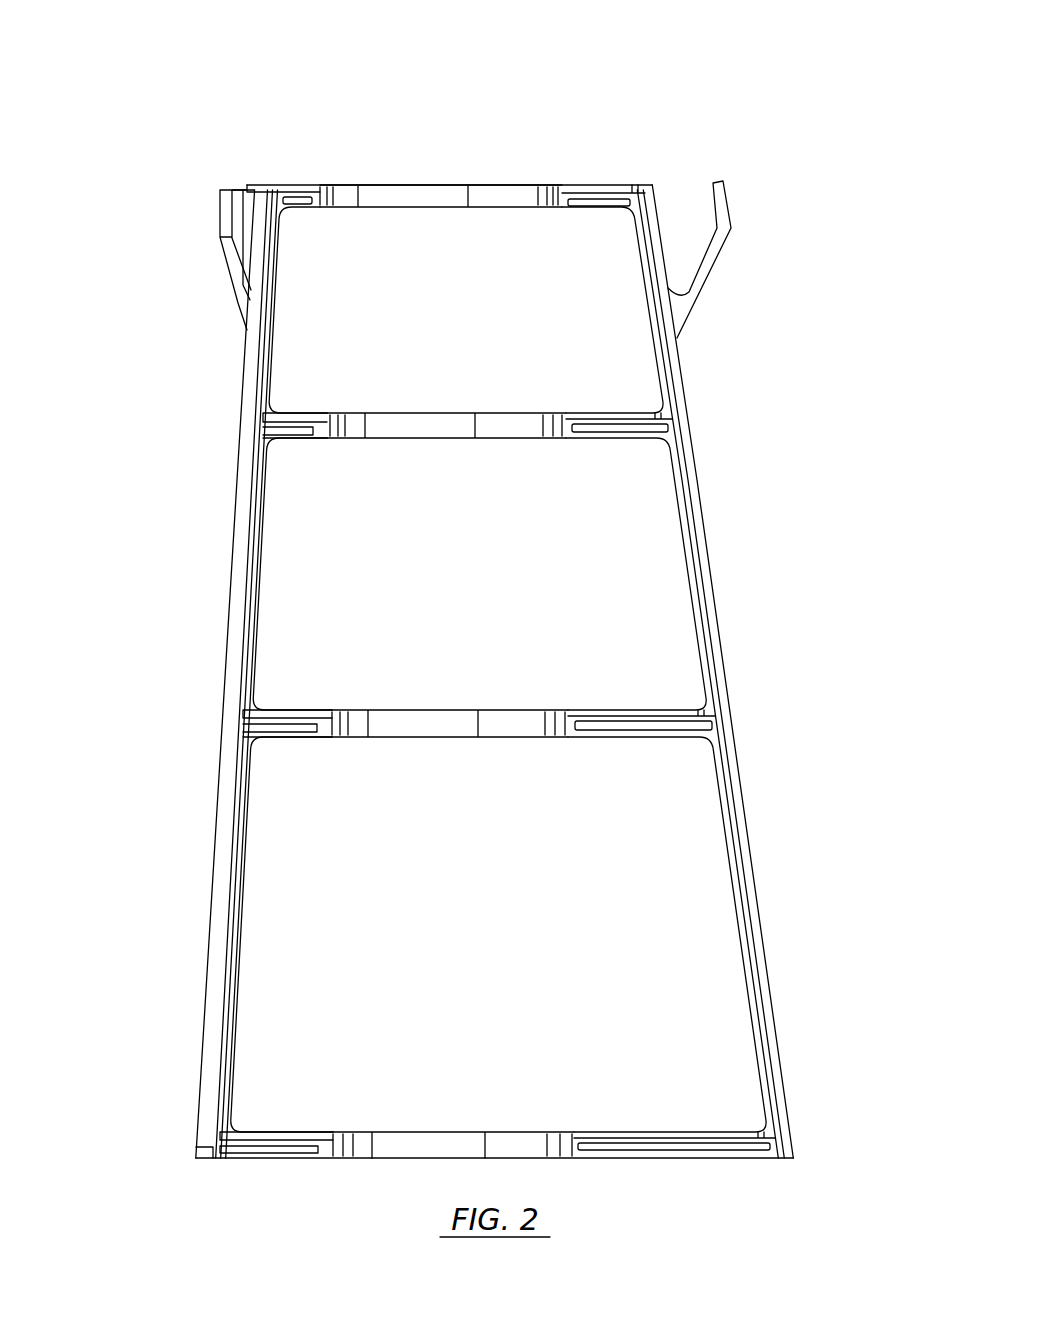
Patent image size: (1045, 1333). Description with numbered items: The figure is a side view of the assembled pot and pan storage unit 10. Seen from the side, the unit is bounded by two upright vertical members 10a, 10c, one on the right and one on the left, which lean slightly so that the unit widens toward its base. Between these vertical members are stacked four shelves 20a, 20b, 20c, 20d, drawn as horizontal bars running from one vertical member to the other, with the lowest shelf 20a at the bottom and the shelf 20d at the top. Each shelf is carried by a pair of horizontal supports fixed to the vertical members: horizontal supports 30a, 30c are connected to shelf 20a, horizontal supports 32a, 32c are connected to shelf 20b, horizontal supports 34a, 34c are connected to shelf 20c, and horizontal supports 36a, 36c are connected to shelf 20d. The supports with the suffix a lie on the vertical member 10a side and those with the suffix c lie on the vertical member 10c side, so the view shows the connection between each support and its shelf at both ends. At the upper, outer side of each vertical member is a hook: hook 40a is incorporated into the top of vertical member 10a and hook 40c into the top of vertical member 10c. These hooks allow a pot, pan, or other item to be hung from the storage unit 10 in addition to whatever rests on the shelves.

The pot and pan storage unit 10 is at (775, 103).
The vertical member 10a is at (715, 632).
The vertical member 10c is at (233, 655).
The shelf 20a is at (432, 1145).
The shelf 20b is at (460, 722).
The shelf 20c is at (438, 425).
The shelf 20d is at (440, 198).
The horizontal support 30a is at (666, 1150).
The horizontal support 30c is at (275, 1145).
The horizontal support 32a is at (628, 725).
The horizontal support 32c is at (290, 727).
The horizontal support 34a is at (608, 425).
The horizontal support 34c is at (307, 427).
The horizontal support 36a is at (607, 195).
The horizontal support 36c is at (307, 195).
The hook 40a is at (727, 195).
The hook 40c is at (227, 203).